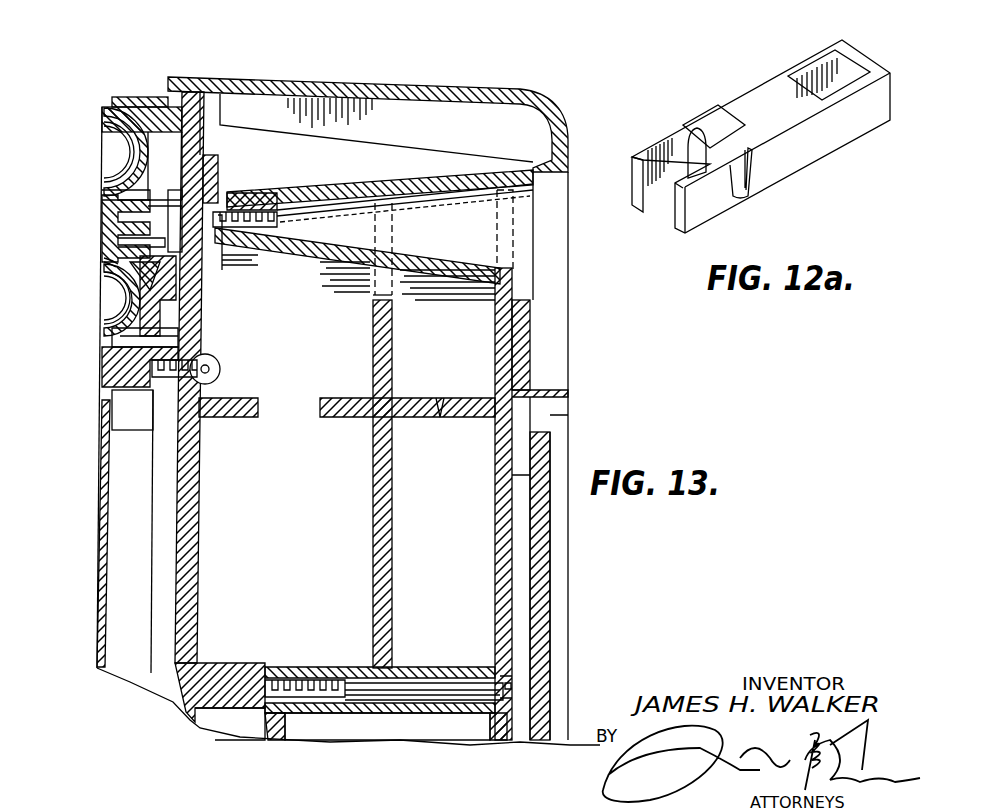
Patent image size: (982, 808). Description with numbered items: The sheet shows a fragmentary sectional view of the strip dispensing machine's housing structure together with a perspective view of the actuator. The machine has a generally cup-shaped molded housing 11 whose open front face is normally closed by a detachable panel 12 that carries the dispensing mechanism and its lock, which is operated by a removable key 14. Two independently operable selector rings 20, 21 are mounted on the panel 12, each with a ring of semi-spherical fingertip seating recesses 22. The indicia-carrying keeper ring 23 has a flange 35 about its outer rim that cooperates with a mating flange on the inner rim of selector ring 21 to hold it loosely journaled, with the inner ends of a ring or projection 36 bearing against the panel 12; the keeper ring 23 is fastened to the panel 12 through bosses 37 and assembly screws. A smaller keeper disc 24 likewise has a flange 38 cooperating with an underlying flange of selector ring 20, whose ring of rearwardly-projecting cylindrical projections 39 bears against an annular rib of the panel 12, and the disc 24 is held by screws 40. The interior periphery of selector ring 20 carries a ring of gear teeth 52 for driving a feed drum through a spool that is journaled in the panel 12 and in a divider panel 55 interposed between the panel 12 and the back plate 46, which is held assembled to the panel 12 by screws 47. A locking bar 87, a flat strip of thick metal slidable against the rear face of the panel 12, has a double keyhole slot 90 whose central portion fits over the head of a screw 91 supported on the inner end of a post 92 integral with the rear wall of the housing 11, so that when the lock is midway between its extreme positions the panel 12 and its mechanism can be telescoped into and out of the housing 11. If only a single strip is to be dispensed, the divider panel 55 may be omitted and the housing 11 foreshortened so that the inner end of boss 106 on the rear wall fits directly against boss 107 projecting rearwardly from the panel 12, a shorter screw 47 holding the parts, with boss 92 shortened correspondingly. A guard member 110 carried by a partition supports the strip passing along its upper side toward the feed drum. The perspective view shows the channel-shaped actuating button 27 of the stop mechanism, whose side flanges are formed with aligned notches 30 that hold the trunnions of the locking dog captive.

In FIG. 13, the housing 11 is at (512, 80).
In FIG. 13, the panel 12 is at (204, 622).
In FIG. 13, the key 14 is at (190, 45).
In FIG. 13, the selector ring 20 is at (100, 298).
In FIG. 13, the selector ring 21 is at (100, 132).
In FIG. 13, the fingertip seating recesses 22 is at (102, 170).
In FIG. 13, the keeper ring 23 is at (102, 229).
In FIG. 13, the keeper disc 24 is at (102, 386).
In FIG. 12A, the actuating button 27 is at (868, 130).
In FIG. 12A, the notches 30 is at (697, 148).
In FIG. 13, the flange 35 is at (104, 196).
In FIG. 13, the ring or projection 36 is at (167, 113).
In FIG. 13, the bosses 37 is at (157, 208).
In FIG. 13, the flange 38 is at (112, 341).
In FIG. 13, the cylindrical projections 39 is at (132, 410).
In FIG. 13, the screws 40 is at (212, 374).
In FIG. 13, the back plate 46 is at (496, 563).
In FIG. 13, the screws 47 is at (416, 690).
In FIG. 13, the gear teeth 52 is at (102, 266).
In FIG. 13, the divider panel 55 is at (372, 479).
In FIG. 13, the locking bar 87 is at (220, 171).
In FIG. 13, the double keyhole slot 90 is at (222, 240).
In FIG. 13, the screw 91 is at (262, 205).
In FIG. 13, the post 92 is at (343, 193).
In FIG. 13, the boss 106 is at (462, 715).
In FIG. 13, the boss 107 is at (285, 712).
In FIG. 13, the guard member 110 is at (320, 408).